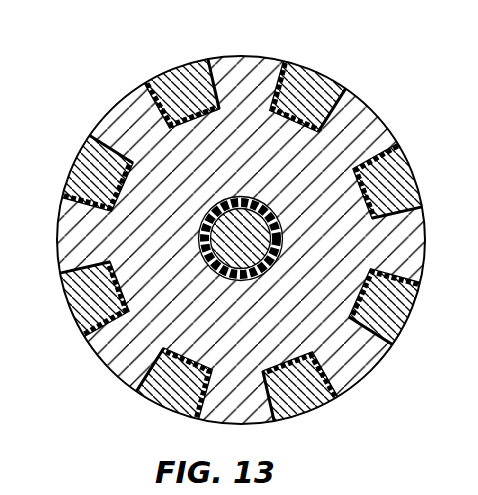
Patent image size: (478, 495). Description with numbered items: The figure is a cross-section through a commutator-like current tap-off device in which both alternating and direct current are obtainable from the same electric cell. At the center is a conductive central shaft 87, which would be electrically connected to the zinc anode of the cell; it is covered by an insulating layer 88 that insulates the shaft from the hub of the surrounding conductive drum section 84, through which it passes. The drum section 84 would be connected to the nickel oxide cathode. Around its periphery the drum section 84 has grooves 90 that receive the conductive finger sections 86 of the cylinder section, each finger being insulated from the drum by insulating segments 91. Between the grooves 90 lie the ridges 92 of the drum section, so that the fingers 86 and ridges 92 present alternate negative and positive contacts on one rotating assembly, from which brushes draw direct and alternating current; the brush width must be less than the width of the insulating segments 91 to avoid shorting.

The conductive drum section 84 is at (103, 354).
The conductive finger sections 86 is at (337, 83).
The conductive central shaft 87 is at (218, 243).
The insulating layer 88 is at (210, 214).
The grooves 90 is at (405, 162).
The insulating segments 91 is at (273, 75).
The ridges 92 is at (247, 57).